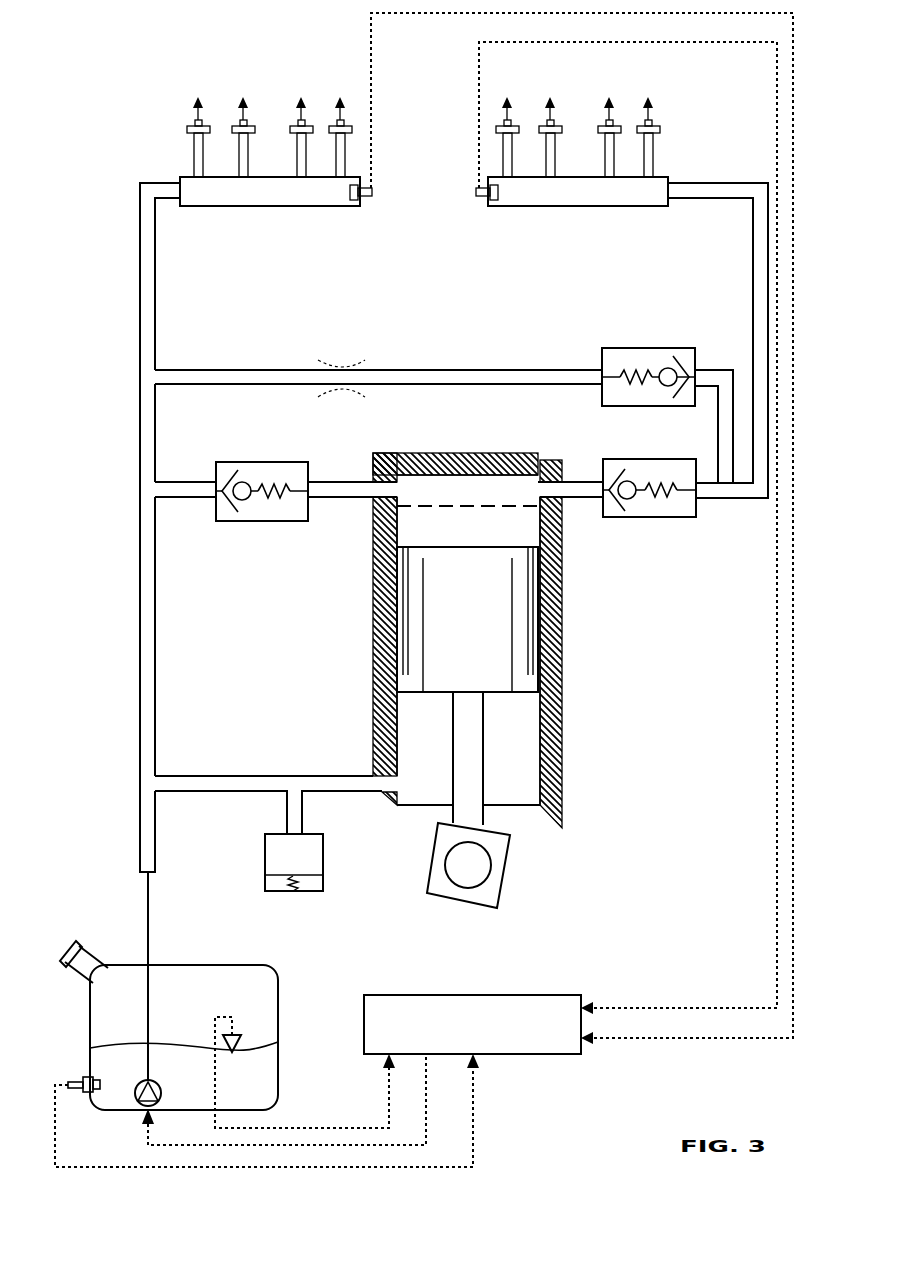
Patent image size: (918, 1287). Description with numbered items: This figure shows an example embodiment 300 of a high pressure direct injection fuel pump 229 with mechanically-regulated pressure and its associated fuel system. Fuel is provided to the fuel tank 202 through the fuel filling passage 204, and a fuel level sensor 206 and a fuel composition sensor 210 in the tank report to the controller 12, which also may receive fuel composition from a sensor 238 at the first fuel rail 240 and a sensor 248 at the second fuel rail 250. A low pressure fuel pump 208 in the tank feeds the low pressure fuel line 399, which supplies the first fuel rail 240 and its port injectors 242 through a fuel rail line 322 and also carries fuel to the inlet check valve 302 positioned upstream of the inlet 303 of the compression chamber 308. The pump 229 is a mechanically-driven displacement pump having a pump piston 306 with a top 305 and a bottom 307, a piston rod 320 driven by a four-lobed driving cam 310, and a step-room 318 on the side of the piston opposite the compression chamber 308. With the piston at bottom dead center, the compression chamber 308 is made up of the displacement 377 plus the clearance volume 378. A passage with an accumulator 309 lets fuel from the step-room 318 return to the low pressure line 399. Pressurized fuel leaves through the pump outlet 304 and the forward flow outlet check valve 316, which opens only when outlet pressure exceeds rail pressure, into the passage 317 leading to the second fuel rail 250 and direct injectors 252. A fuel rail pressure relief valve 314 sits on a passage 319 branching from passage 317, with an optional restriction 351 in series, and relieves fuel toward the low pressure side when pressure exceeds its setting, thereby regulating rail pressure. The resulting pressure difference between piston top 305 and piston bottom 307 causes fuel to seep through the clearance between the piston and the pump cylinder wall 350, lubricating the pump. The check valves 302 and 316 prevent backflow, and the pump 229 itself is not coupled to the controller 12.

The controller 12 is at (518, 1033).
The fuel tank 202 is at (278, 976).
The fuel filling passage 204 is at (93, 957).
The fuel level sensor 206 is at (232, 1032).
The low pressure fuel pump 208 is at (158, 1084).
The fuel composition sensor 210 is at (85, 1077).
The direct injection fuel pump 229 is at (448, 332).
The fuel composition sensor 238 is at (371, 199).
The first fuel rail 240 is at (270, 161).
The port injectors 242 is at (300, 126).
The fuel composition sensor 248 is at (478, 199).
The second fuel rail 250 is at (595, 145).
The direct injectors 252 is at (608, 126).
The example embodiment 300 is at (146, 54).
The inlet check valve 302 is at (222, 462).
The inlet 303 is at (358, 480).
The pump outlet 304 is at (578, 482).
The piston top 305 is at (520, 530).
The pump piston 306 is at (519, 619).
The piston bottom 307 is at (520, 690).
The compression chamber 308 is at (467, 475).
The accumulator 309 is at (320, 891).
The driving cam 310 is at (510, 866).
The fuel rail pressure relief valve 314 is at (618, 348).
The outlet check valve 316 is at (642, 459).
The passage 317 is at (756, 498).
The step-room 318 is at (530, 790).
The passage 319 is at (733, 370).
The piston rod 320 is at (483, 812).
The fuel rail line 322 is at (371, 527).
The pump cylinder wall 350 is at (540, 632).
The restriction 351 is at (332, 358).
The displacement 377 is at (468, 538).
The clearance volume 378 is at (502, 503).
The low pressure fuel line 399 is at (140, 604).